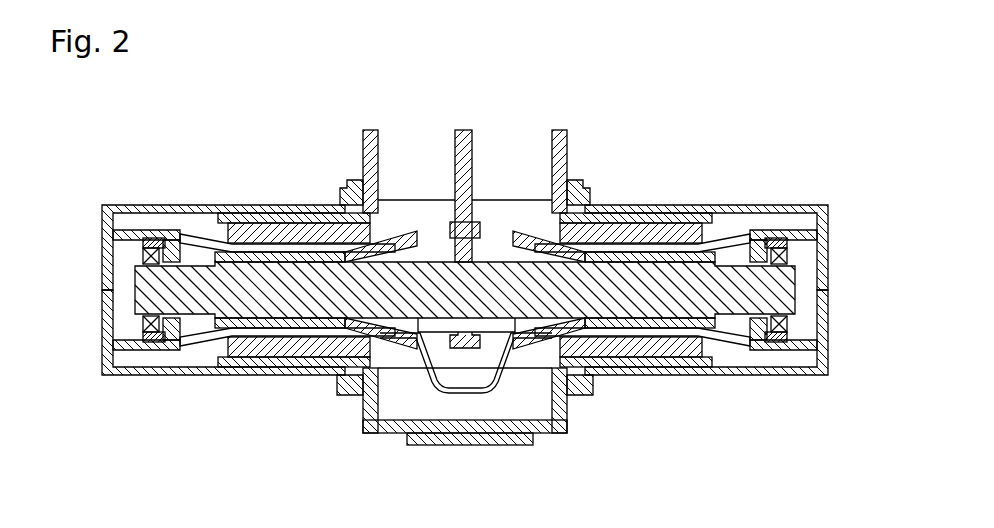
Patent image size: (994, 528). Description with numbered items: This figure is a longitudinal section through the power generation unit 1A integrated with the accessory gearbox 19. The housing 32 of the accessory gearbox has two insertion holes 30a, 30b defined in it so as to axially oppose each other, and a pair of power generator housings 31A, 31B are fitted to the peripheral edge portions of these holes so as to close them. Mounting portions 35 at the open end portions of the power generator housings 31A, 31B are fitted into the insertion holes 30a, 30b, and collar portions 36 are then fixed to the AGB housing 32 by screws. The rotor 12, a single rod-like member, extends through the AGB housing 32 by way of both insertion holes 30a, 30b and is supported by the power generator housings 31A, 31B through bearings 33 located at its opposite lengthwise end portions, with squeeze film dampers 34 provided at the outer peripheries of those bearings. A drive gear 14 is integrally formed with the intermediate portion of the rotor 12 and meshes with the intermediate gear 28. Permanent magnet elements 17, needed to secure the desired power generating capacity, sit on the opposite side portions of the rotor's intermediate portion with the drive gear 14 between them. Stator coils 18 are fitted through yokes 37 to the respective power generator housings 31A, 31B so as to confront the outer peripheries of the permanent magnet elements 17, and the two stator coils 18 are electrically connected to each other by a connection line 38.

The power generation unit 1A is at (718, 188).
The rotor 12 is at (652, 282).
The drive gear 14 is at (474, 438).
The permanent magnet elements 17 is at (267, 328).
The stator coils 18 is at (264, 238).
The accessory gearbox 19 is at (583, 139).
The intermediate gear 28 is at (455, 205).
The insertion hole 30a is at (372, 210).
The insertion hole 30b is at (555, 205).
The power generator housing 31A is at (181, 204).
The power generator housing 31B is at (780, 205).
The housing of the accessory gearbox 32 is at (366, 188).
The bearings 33 is at (146, 257).
The squeeze film dampers 34 is at (153, 348).
The mounting portions 35 is at (393, 406).
The collar portions 36 is at (338, 378).
The yokes 37 is at (247, 333).
The connection line 38 is at (466, 374).